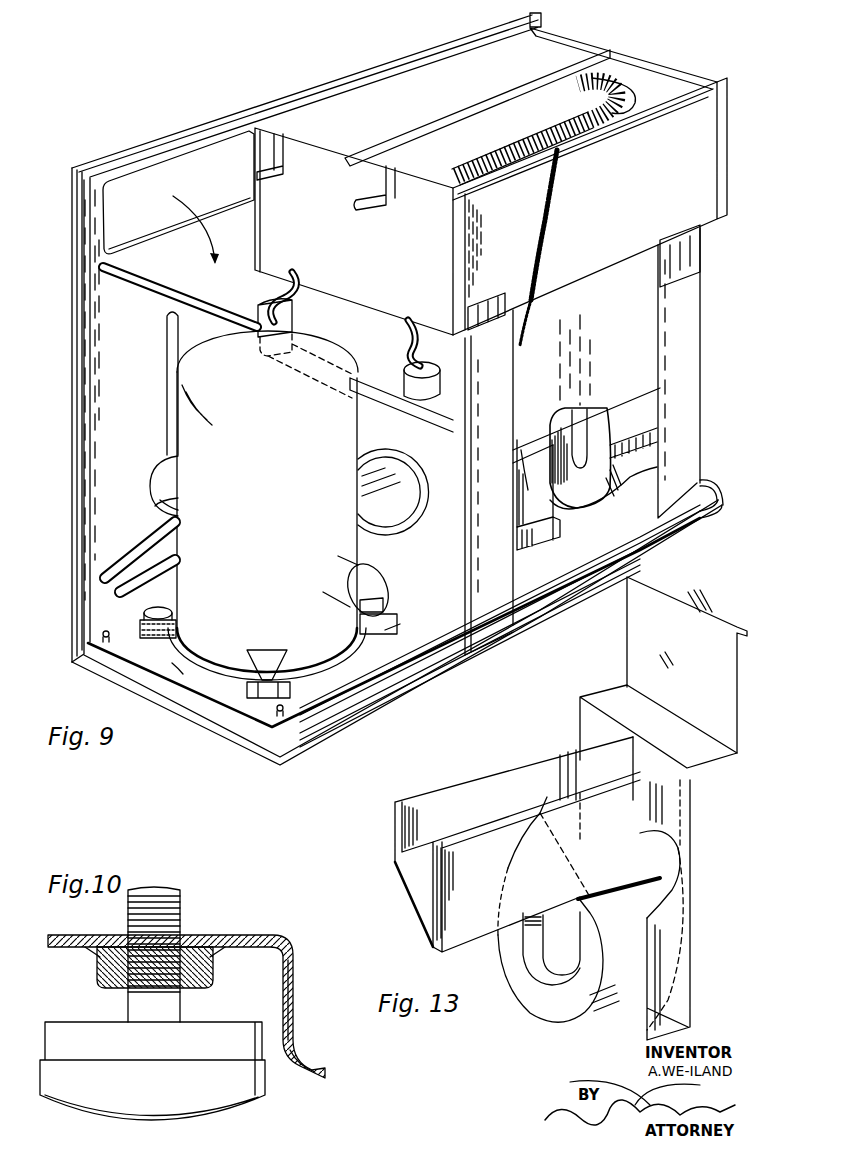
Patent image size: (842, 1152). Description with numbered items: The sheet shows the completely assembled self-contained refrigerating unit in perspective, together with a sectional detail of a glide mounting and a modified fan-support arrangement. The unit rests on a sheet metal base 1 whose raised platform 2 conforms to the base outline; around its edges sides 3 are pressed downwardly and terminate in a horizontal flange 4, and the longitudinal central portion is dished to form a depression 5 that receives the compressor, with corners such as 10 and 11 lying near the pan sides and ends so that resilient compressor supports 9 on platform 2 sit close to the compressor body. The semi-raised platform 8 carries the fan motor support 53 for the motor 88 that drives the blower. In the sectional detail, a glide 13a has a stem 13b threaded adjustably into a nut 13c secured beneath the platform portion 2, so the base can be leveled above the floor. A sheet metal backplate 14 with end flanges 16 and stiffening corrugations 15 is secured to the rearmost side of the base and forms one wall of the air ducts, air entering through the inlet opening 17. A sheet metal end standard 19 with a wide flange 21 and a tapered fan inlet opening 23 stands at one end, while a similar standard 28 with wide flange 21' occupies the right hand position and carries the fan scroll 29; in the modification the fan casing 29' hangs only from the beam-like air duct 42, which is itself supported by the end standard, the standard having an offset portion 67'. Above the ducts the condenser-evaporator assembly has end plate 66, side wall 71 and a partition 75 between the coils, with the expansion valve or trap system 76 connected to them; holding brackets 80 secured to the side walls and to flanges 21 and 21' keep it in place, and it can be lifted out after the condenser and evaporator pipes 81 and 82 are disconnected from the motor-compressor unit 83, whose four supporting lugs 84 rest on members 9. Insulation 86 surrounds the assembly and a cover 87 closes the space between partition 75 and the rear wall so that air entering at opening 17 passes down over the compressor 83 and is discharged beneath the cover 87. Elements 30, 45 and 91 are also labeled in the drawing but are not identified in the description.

In FIG. 9, the base 1 is at (410, 712).
In FIG. 10, the base 1 is at (300, 960).
In FIG. 9, the raised platform 2 is at (643, 540).
In FIG. 10, the raised platform 2 is at (230, 932).
In FIG. 9, the sides 3 is at (613, 570).
In FIG. 10, the sides 3 is at (303, 993).
In FIG. 9, the horizontal flange 4 is at (590, 582).
In FIG. 10, the horizontal flange 4 is at (310, 1065).
In FIG. 9, the recessed portion 5 is at (240, 672).
In FIG. 9, the semi-raised platform 8 is at (560, 533).
In FIG. 9, the compressor supports 9 is at (140, 628).
In FIG. 9, the corner of depression 10 is at (350, 665).
In FIG. 9, the corner of depression 11 is at (172, 663).
In FIG. 10, the glide 13a is at (74, 1112).
In FIG. 9, the stem 13b is at (108, 634).
In FIG. 10, the stem 13b is at (185, 904).
In FIG. 10, the nut 13c is at (207, 977).
In FIG. 9, the backplate 14 is at (68, 479).
In FIG. 9, the stiffening corrugations 15 is at (168, 290).
In FIG. 9, the end flanges 16 is at (236, 114).
In FIG. 9, the inlet opening 17 is at (163, 157).
In FIG. 9, the sheet metal plate 19 is at (434, 616).
In FIG. 9, the wide flange 21 is at (511, 616).
In FIG. 9, the wide flange 21' is at (705, 511).
In FIG. 9, the fan inlet opening 23 is at (415, 502).
In FIG. 9, the standard 28 is at (740, 387).
In FIG. 13, the standard 28 is at (688, 967).
In FIG. 9, the fan scroll 29 is at (586, 452).
In FIG. 13, the fan casing 29' is at (564, 915).
In FIG. 9, the blower 30 is at (590, 417).
In FIG. 13, the air duct 42 is at (396, 831).
In FIG. 9, the support column 45 is at (520, 400).
In FIG. 9, the fan motor support 53 is at (550, 507).
In FIG. 9, the end plate 66 is at (398, 300).
In FIG. 13, the offset portion 67' is at (648, 742).
In FIG. 9, the sheet metal wall 71 is at (540, 238).
In FIG. 9, the partition 75 is at (513, 106).
In FIG. 9, the expansion valve or trap system 76 is at (436, 404).
In FIG. 9, the bracket 80 is at (700, 242).
In FIG. 9, the condenser pipe 81 is at (275, 180).
In FIG. 9, the evaporator pipe 82 is at (368, 212).
In FIG. 9, the motor-compressor unit 83 is at (167, 409).
In FIG. 9, the supporting lugs 84 is at (173, 612).
In FIG. 9, the insulation 86 is at (562, 216).
In FIG. 9, the cover 87 is at (570, 44).
In FIG. 9, the motor 88 is at (553, 490).
In FIG. 9, the hose coil 91 is at (630, 103).